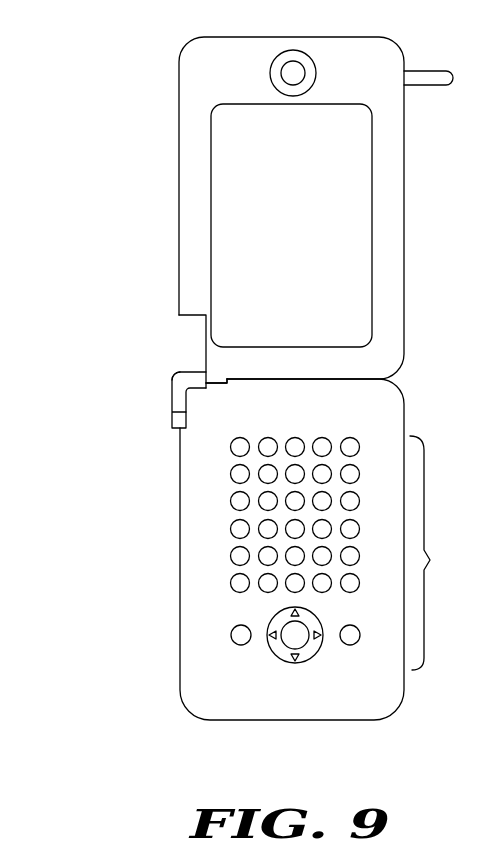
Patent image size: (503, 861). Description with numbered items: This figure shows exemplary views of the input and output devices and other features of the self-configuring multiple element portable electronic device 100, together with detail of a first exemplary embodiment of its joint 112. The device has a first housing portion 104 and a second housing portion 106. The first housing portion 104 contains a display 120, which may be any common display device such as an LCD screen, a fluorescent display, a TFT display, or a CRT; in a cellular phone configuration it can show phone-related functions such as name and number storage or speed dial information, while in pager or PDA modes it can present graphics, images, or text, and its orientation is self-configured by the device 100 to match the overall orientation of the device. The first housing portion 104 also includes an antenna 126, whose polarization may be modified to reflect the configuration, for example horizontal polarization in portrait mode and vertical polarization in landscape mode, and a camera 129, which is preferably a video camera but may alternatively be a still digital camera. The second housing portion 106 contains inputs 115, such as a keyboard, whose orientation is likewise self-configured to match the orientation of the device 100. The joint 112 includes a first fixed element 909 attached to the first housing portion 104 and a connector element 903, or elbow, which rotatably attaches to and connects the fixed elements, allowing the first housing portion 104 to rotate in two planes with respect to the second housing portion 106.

The self-configuring multiple element portable electronic device 100 is at (170, 738).
The first housing portion 104 is at (179, 193).
The second housing portion 106 is at (180, 601).
The joint 112 is at (168, 372).
The inputs 115 is at (448, 553).
The display 120 is at (358, 224).
The antenna 126 is at (426, 75).
The camera 129 is at (292, 52).
The connector element 903 is at (177, 370).
The first fixed element 909 is at (183, 420).